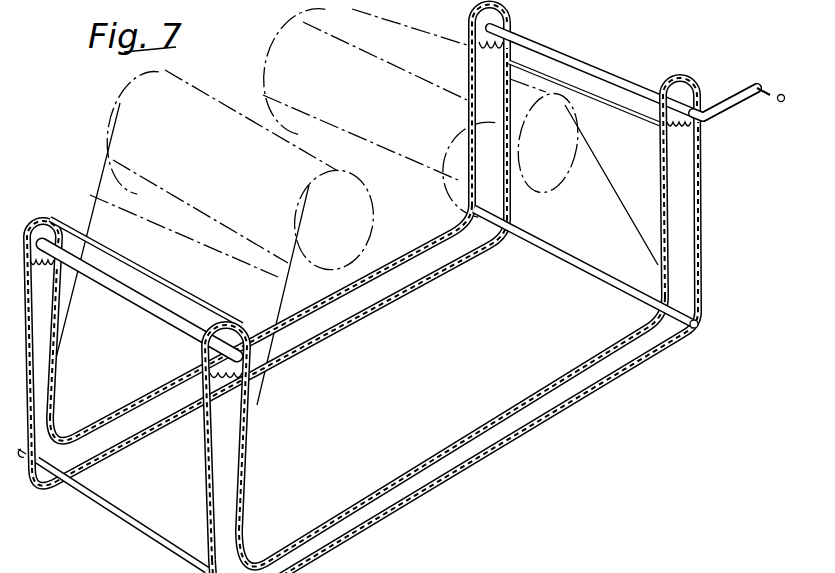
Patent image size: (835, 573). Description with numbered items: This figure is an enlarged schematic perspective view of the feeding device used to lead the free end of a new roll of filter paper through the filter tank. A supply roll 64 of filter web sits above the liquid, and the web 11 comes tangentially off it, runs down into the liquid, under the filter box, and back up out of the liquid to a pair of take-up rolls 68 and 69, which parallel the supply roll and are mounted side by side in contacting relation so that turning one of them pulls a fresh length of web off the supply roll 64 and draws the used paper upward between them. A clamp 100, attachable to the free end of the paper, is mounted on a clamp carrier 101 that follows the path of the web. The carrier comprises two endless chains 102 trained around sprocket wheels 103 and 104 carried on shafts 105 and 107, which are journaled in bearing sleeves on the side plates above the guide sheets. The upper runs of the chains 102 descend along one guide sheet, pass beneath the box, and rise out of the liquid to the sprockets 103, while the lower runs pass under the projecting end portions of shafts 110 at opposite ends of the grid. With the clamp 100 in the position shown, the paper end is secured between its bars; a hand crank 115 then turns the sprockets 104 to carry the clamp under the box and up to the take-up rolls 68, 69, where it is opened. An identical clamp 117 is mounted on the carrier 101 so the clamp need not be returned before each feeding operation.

The web 11 is at (272, 292).
The supply roll 64 is at (363, 242).
The take-up roll 68 is at (555, 170).
The take-up roll 69 is at (261, 59).
The clamp 100 is at (175, 275).
The clamp carrier 101 is at (547, 430).
The endless chains 102 is at (128, 447).
The sprocket wheels 103 is at (511, 23).
The sprocket wheels 104 is at (50, 221).
The shaft 105 is at (622, 80).
The shaft 107 is at (137, 299).
The shafts 110 is at (128, 524).
The hand crank 115 is at (763, 100).
The clamp 117 is at (616, 119).